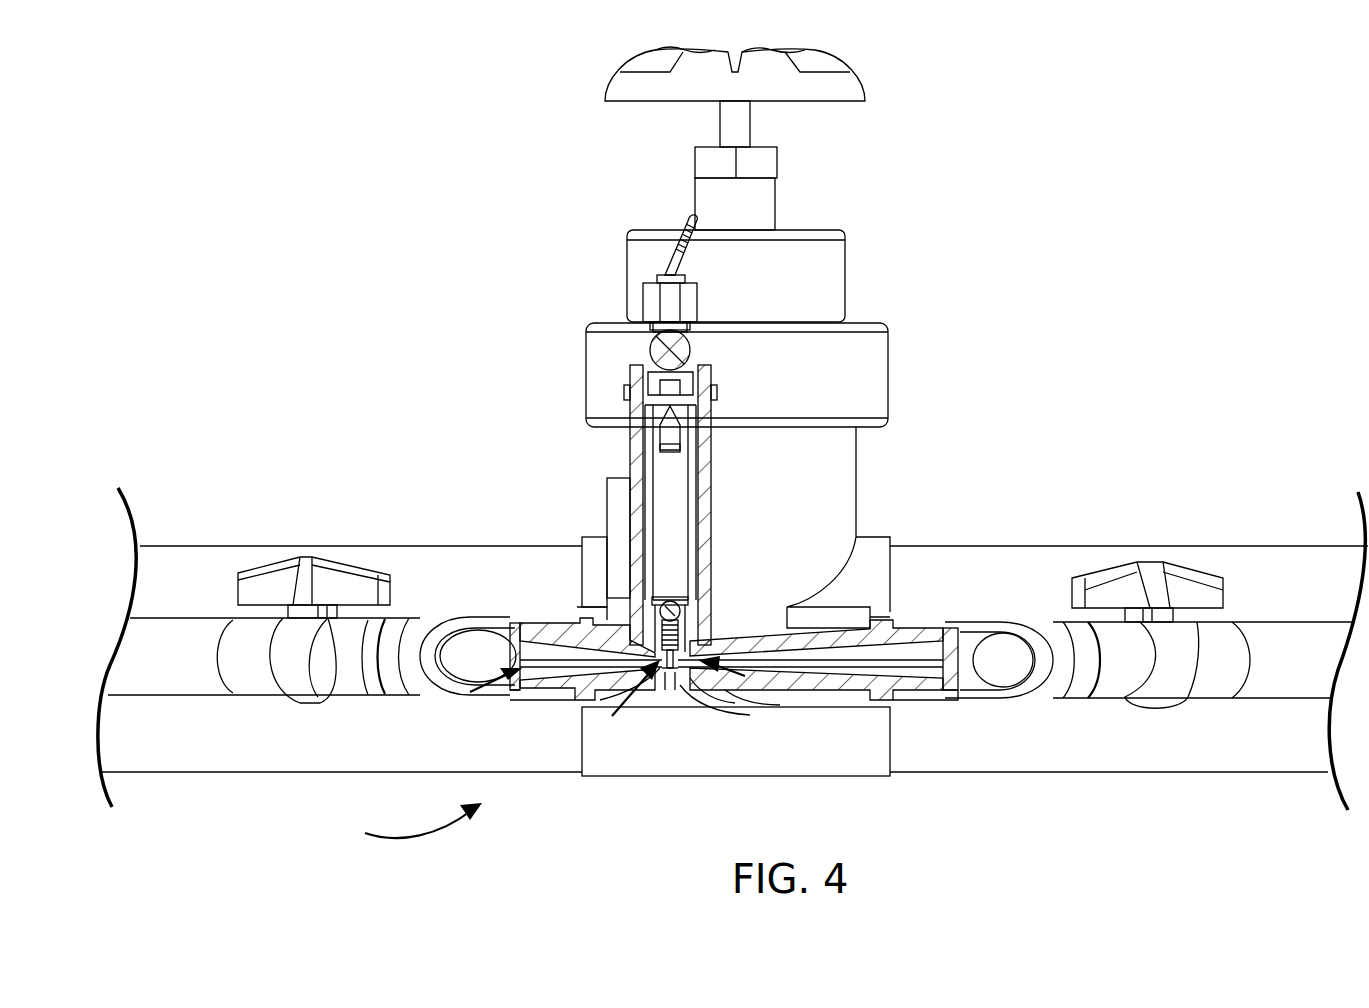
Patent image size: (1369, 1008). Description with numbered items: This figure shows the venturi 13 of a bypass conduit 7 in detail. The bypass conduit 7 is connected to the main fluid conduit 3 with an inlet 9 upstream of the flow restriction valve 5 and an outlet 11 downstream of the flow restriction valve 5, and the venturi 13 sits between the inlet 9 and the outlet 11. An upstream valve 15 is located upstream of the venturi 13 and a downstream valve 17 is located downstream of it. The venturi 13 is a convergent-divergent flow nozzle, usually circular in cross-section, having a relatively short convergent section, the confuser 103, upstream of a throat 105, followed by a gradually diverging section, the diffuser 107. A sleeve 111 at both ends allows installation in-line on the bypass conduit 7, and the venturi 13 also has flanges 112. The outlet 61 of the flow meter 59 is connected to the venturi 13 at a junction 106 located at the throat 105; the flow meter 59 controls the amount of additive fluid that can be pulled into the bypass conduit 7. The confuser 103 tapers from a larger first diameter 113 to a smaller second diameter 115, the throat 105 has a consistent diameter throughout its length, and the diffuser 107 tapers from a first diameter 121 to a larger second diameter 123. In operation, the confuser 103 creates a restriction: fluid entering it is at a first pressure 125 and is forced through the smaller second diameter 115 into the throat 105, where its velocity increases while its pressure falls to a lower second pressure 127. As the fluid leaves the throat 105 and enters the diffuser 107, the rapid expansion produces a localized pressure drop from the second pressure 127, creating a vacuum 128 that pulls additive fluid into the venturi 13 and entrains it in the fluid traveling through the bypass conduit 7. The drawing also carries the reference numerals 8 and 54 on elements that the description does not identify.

The main fluid conduit 3 is at (1043, 545).
The flow restriction valve 5 is at (832, 62).
The bypass conduit 7 is at (411, 821).
The pipe wall 8 is at (555, 690).
The inlet 9 is at (200, 632).
The outlet 11 is at (1290, 637).
The venturi 13 is at (612, 693).
The upstream valve 15 is at (322, 557).
The downstream valve 17 is at (1152, 562).
The set screw 54 is at (678, 231).
The flow meter 59 is at (712, 455).
The outlet 61 is at (640, 630).
The confuser 103 is at (545, 635).
The throat 105 is at (672, 700).
The junction 106 is at (685, 640).
The diffuser 107 is at (855, 690).
The sleeve 111 is at (512, 628).
The flanges 112 is at (883, 620).
The first diameter 113 is at (523, 693).
The second diameter 115 is at (670, 680).
The first diameter 121 is at (700, 690).
The second diameter 123 is at (957, 690).
The first pressure 125 is at (470, 692).
The second pressure 127 is at (640, 690).
The vacuum 128 is at (780, 690).